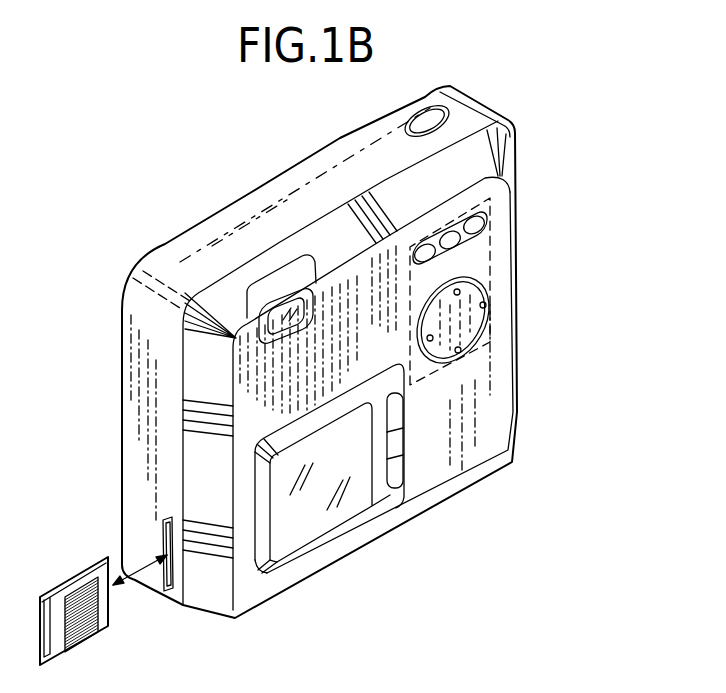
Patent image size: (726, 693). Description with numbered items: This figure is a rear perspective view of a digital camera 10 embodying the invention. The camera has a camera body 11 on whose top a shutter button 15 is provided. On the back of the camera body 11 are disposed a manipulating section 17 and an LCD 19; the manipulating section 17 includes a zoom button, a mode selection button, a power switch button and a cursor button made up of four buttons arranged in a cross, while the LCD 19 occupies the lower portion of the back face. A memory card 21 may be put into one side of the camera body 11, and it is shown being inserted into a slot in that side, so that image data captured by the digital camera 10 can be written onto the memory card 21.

The digital camera 10 is at (165, 197).
The camera body 11 is at (135, 312).
The shutter button 15 is at (427, 114).
The manipulating section 17 is at (510, 268).
The LCD 19 is at (350, 500).
The memory card 21 is at (65, 593).